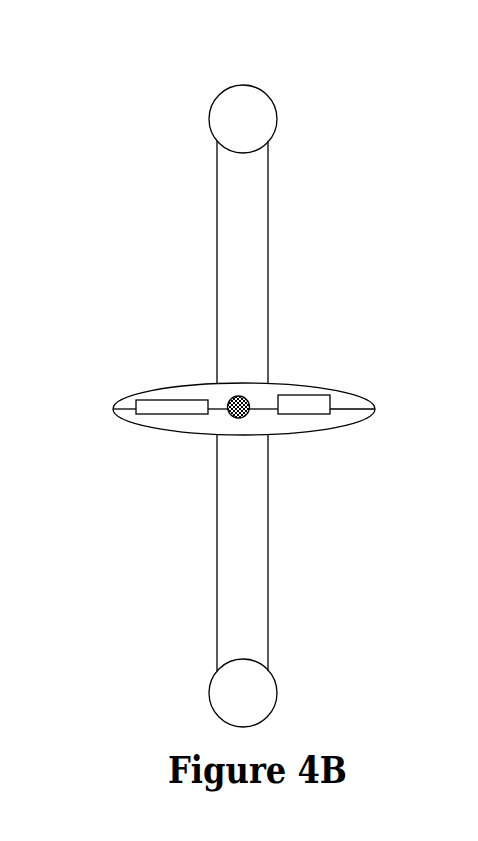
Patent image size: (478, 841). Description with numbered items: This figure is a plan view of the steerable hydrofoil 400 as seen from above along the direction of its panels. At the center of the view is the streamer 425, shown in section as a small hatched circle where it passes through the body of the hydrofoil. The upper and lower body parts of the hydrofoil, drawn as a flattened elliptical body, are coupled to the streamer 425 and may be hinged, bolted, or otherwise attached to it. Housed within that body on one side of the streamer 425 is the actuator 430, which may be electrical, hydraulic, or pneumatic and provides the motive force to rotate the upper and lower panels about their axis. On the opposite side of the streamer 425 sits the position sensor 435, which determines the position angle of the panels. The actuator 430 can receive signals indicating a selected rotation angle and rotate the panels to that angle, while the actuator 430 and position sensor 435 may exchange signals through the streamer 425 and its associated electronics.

The steerable hydrofoil 400 is at (238, 38).
The actuator 430 is at (178, 400).
The position sensor 435 is at (308, 395).
The streamer 425 is at (236, 418).